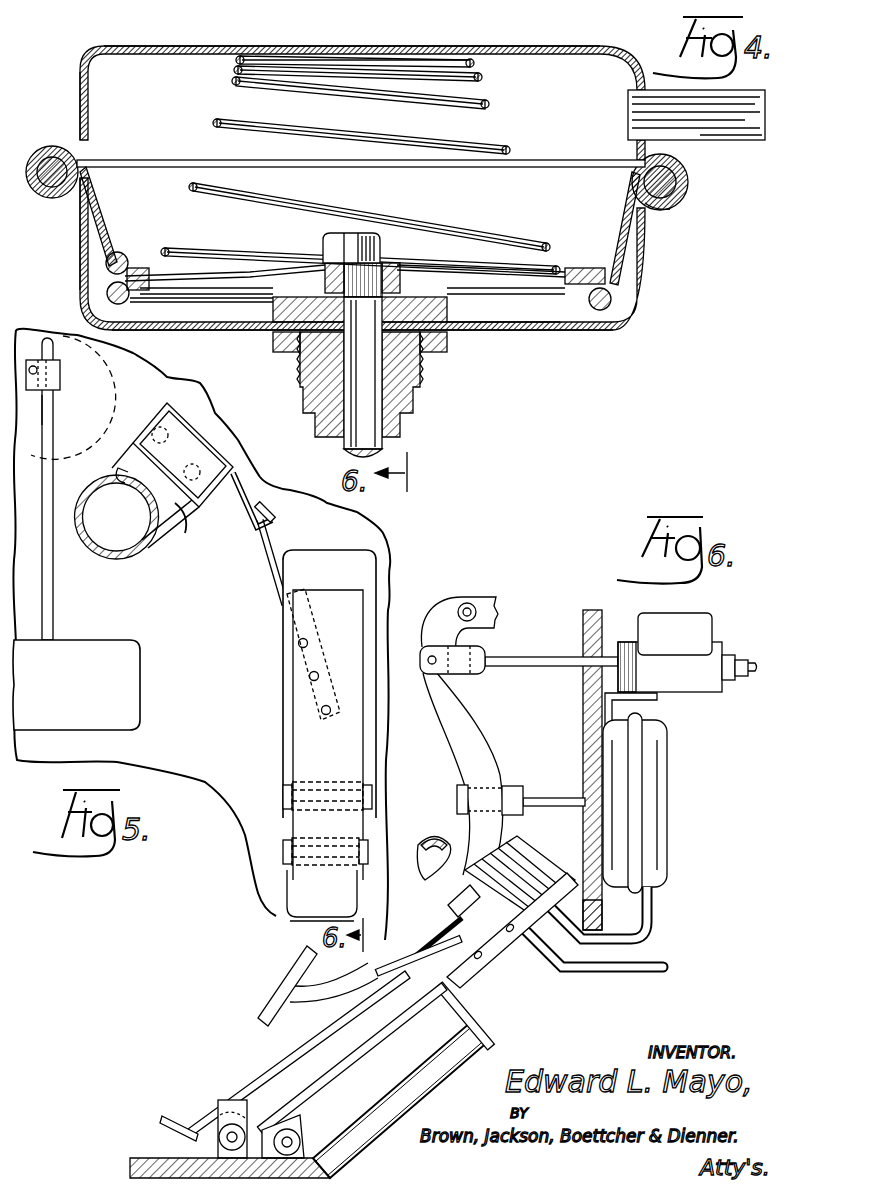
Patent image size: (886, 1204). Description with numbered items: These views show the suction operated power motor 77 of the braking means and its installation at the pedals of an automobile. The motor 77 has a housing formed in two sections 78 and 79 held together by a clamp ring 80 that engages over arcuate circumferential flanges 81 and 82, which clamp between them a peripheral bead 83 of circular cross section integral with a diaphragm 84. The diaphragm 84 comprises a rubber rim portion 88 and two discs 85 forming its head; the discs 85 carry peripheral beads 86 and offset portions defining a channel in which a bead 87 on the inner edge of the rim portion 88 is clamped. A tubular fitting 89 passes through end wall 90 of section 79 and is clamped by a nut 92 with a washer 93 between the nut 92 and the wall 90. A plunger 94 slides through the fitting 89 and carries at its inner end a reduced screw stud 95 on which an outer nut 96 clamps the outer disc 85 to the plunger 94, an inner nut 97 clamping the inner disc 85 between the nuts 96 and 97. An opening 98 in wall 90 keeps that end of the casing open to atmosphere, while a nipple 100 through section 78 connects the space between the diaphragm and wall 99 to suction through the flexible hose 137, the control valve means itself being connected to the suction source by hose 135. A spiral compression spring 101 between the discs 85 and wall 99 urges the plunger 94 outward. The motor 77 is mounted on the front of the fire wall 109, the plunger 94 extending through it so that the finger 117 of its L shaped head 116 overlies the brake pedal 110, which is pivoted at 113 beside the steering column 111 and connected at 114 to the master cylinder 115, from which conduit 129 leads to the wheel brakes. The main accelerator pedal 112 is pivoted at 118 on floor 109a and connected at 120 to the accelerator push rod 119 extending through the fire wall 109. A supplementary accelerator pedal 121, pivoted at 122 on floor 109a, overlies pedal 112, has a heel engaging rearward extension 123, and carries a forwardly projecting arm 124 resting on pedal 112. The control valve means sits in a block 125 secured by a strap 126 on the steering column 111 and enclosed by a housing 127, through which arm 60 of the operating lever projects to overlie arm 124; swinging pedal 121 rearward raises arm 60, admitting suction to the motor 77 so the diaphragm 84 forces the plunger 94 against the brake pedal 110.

In FIG. 5, the arm of lever 60 is at (253, 530).
In FIG. 6, the arm of lever 60 is at (452, 920).
In FIG. 4, the suction operated power motor 77 is at (92, 44).
In FIG. 5, the suction operated power motor 77 is at (118, 392).
In FIG. 6, the suction operated power motor 77 is at (670, 855).
In FIG. 4, the housing section 78 is at (78, 86).
In FIG. 4, the housing section 79 is at (78, 248).
In FIG. 4, the clamp ring 80 is at (689, 182).
In FIG. 4, the arcuate circumferential flange 81 is at (684, 165).
In FIG. 4, the arcuate circumferential flange 82 is at (676, 208).
In FIG. 4, the peripheral bead 83 is at (48, 198).
In FIG. 4, the diaphragm 84 is at (150, 200).
In FIG. 4, the discs 85 is at (190, 268).
In FIG. 4, the peripheral beads 86 is at (125, 258).
In FIG. 4, the bead 87 is at (142, 296).
In FIG. 4, the rim portion 88 is at (622, 220).
In FIG. 4, the tubular fitting 89 is at (405, 382).
In FIG. 4, the end wall 90 is at (495, 333).
In FIG. 4, the nut 92 is at (297, 351).
In FIG. 4, the washer 93 is at (280, 322).
In FIG. 4, the plunger 94 is at (355, 414).
In FIG. 5, the plunger 94 is at (44, 342).
In FIG. 6, the plunger 94 is at (548, 792).
In FIG. 4, the screw stud 95 is at (335, 230).
In FIG. 4, the outer nut 96 is at (402, 276).
In FIG. 4, the inner nut 97 is at (397, 248).
In FIG. 4, the opening 98 is at (538, 333).
In FIG. 4, the wall 99 is at (178, 36).
In FIG. 4, the nipple 100 is at (768, 128).
In FIG. 4, the spiral compression spring 101 is at (510, 152).
In FIG. 6, the fire wall 109 is at (436, 1055).
In FIG. 6, the floor 109a is at (153, 1157).
In FIG. 6, the brake pedal 110 is at (480, 733).
In FIG. 5, the steering column 111 is at (121, 560).
In FIG. 6, the steering column 111 is at (448, 862).
In FIG. 5, the accelerator pedal 112 is at (368, 572).
In FIG. 6, the accelerator pedal 112 is at (366, 1045).
In FIG. 6, the pivot 113 is at (470, 604).
In FIG. 6, the operating connection 114 is at (462, 668).
In FIG. 6, the master cylinder 115 is at (694, 684).
In FIG. 5, the L shaped head 116 is at (53, 428).
In FIG. 6, the L shaped head 116 is at (521, 816).
In FIG. 5, the finger 117 is at (62, 378).
In FIG. 6, the finger 117 is at (457, 800).
In FIG. 5, the pivot 118 is at (281, 796).
In FIG. 6, the pivot 118 is at (292, 1130).
In FIG. 6, the accelerator push rod 119 is at (496, 1036).
In FIG. 6, the connection 120 is at (423, 992).
In FIG. 5, the supplementary accelerator pedal 121 is at (302, 720).
In FIG. 6, the supplementary accelerator pedal 121 is at (293, 1053).
In FIG. 5, the pivot 122 is at (283, 853).
In FIG. 6, the pivot 122 is at (230, 1125).
In FIG. 5, the rearward extension 123 is at (293, 918).
In FIG. 6, the rearward extension 123 is at (168, 1118).
In FIG. 5, the arm 124 is at (277, 526).
In FIG. 6, the arm 124 is at (418, 956).
In FIG. 5, the block 125 is at (178, 510).
In FIG. 6, the block 125 is at (580, 893).
In FIG. 5, the strap 126 is at (160, 535).
In FIG. 6, the strap 126 is at (496, 986).
In FIG. 5, the housing 127 is at (191, 452).
In FIG. 6, the housing 127 is at (522, 866).
In FIG. 6, the conduit 129 is at (740, 655).
In FIG. 6, the flexible hose or conduit 135 is at (637, 974).
In FIG. 6, the flexible hose or conduit 137 is at (652, 940).